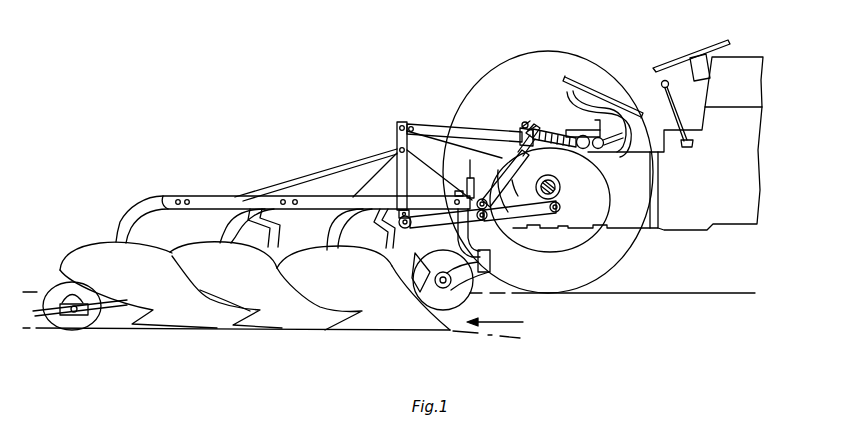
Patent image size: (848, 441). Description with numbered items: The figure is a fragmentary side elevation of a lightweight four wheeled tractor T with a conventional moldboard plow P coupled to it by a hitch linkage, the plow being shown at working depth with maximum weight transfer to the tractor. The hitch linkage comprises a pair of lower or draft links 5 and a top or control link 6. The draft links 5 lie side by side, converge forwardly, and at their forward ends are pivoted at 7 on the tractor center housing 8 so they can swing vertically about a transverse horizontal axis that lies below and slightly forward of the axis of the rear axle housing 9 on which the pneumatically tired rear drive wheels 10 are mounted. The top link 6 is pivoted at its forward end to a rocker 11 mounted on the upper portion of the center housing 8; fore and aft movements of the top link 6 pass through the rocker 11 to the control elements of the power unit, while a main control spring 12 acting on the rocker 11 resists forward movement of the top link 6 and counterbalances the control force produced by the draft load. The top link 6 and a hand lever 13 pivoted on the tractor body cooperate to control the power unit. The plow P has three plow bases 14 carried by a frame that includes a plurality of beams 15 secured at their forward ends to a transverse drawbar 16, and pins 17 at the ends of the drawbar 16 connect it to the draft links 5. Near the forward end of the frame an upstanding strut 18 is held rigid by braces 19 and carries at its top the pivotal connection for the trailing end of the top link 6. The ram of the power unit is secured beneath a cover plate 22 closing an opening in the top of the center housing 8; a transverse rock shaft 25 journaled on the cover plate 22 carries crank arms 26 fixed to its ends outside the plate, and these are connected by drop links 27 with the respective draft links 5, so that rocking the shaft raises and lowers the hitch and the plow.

The lower or draft links 5 is at (481, 194).
The top or control link 6 is at (435, 125).
The pivot 7 is at (559, 214).
The tractor center housing 8 is at (618, 220).
The rear axle housing 9 is at (560, 187).
The rear drive wheels 10 is at (641, 247).
The rocker 11 is at (524, 143).
The main control spring 12 is at (550, 131).
The hand lever 13 is at (622, 157).
The plow bases 14 is at (340, 295).
The beams 15 is at (213, 205).
The transverse drawbar 16 is at (398, 218).
The pins 17 is at (408, 227).
The upstanding strut 18 is at (397, 130).
The braces 19 is at (357, 184).
The cover plate 22 is at (587, 131).
The transverse rock shaft 25 is at (588, 150).
The crank arms 26 is at (540, 129).
The drop links 27 is at (513, 183).
The moldboard plow P is at (296, 184).
The tractor T is at (729, 234).